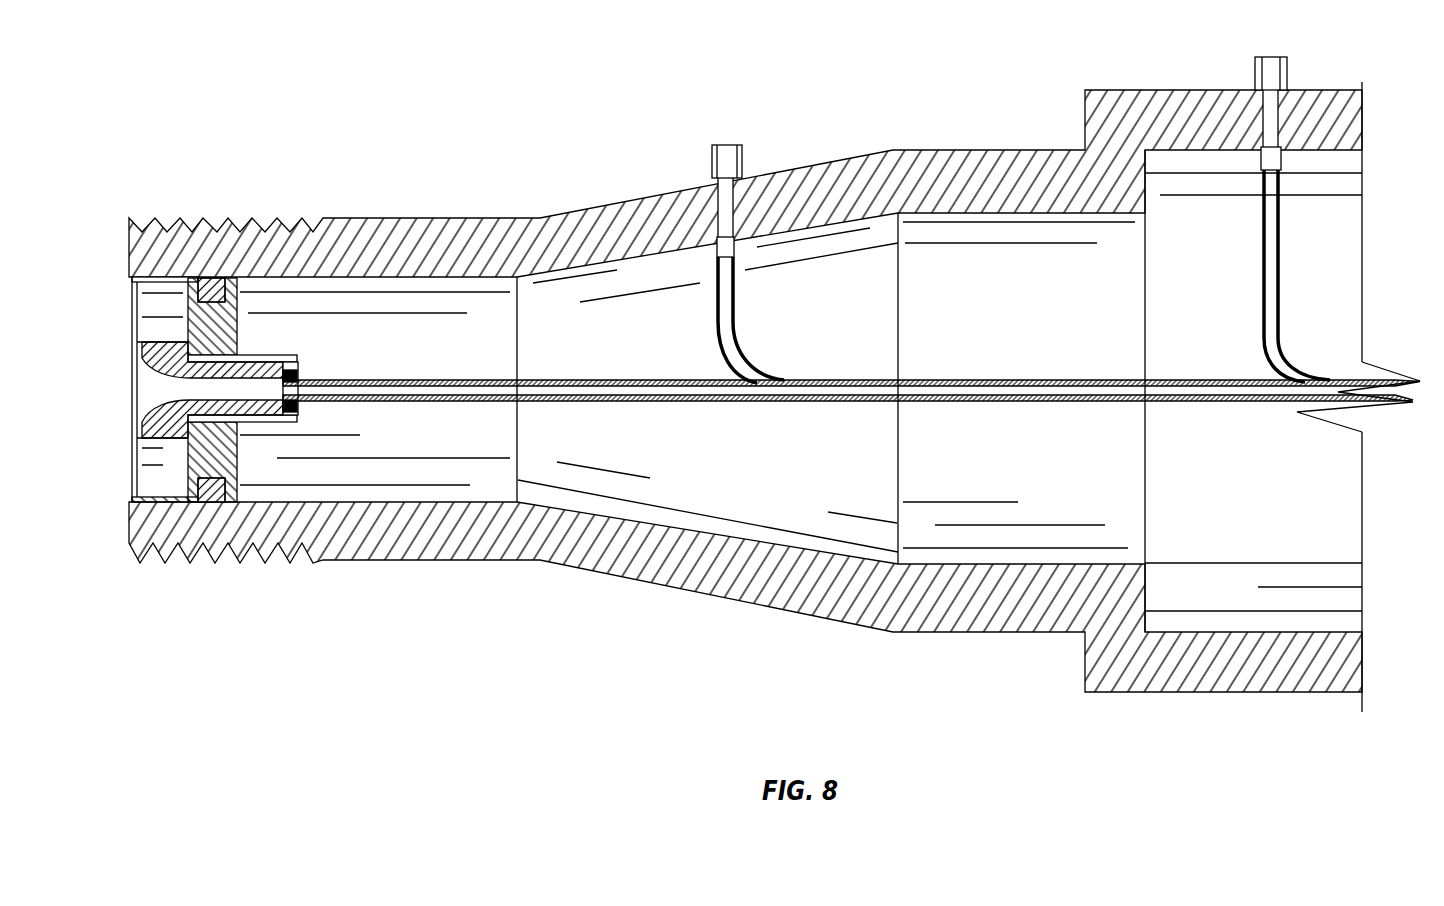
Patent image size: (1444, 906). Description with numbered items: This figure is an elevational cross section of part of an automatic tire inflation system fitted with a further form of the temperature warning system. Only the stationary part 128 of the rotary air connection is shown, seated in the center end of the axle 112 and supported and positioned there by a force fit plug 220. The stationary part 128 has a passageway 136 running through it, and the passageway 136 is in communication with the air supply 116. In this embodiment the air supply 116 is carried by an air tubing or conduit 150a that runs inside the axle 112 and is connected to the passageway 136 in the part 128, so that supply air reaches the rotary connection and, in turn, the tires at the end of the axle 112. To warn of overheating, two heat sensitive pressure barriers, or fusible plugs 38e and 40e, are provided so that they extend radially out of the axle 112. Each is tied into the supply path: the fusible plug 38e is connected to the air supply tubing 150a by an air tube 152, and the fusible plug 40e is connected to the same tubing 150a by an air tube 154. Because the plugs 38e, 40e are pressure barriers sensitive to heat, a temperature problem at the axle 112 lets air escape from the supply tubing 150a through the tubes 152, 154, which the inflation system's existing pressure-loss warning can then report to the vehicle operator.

The axle 112 is at (1118, 88).
The stationary part 128 is at (137, 341).
The passageway 136 is at (160, 390).
The force fit plug 220 is at (215, 453).
The air tubing 150a is at (997, 378).
The fusible plug 38e is at (727, 168).
The air tube 152 is at (737, 312).
The fusible plug 40e is at (1272, 72).
The air tube 154 is at (1261, 312).
The air supply 116 is at (1340, 390).